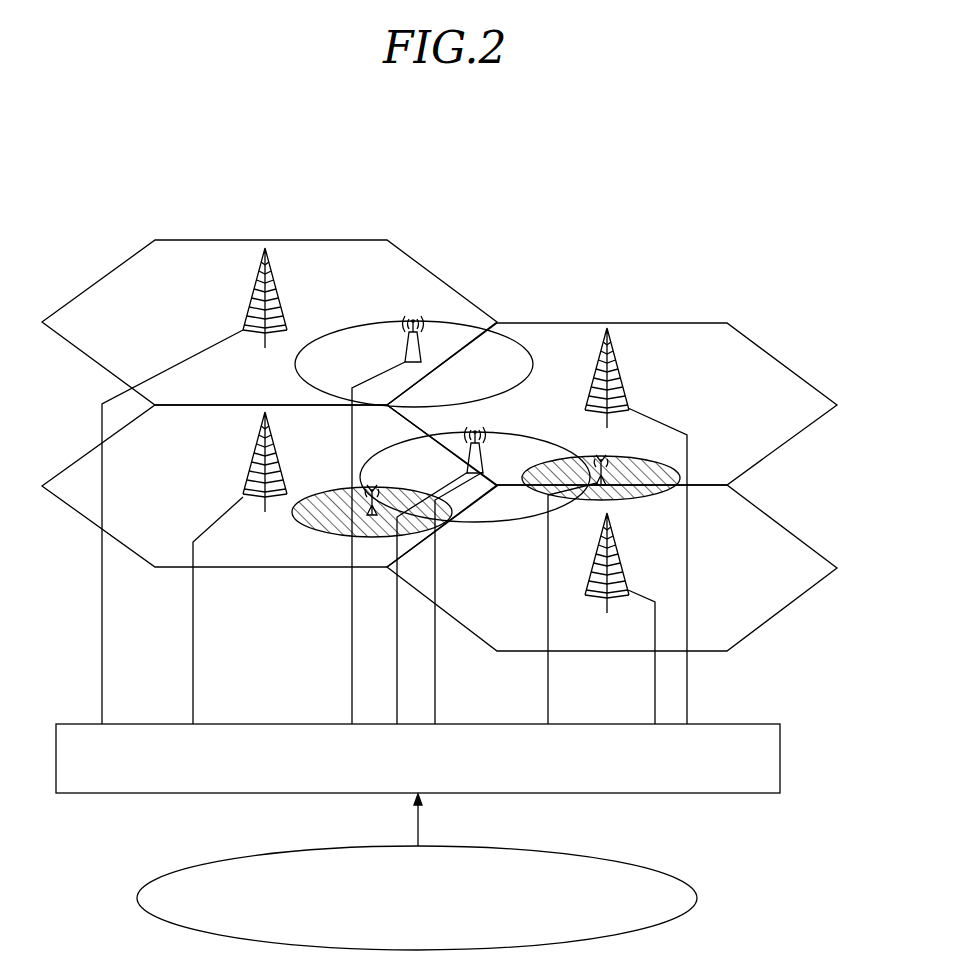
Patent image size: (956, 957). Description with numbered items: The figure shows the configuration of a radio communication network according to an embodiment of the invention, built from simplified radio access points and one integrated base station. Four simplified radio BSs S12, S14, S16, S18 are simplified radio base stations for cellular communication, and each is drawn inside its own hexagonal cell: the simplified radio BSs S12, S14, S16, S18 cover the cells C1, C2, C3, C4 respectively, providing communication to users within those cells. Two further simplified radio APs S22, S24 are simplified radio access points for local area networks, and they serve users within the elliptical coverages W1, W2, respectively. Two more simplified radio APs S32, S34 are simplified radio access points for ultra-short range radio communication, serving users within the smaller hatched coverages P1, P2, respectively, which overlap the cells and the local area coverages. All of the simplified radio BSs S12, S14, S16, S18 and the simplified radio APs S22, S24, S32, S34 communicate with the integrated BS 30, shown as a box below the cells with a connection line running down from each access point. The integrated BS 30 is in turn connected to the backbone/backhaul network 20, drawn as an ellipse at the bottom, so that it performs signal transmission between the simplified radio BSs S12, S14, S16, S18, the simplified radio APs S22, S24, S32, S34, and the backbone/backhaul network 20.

The cell C1 is at (472, 633).
The cell C2 is at (780, 446).
The cell C3 is at (80, 458).
The cell C4 is at (112, 270).
The simplified radio BS S12 is at (618, 542).
The simplified radio BS S14 is at (618, 358).
The simplified radio BS S16 is at (252, 466).
The simplified radio BS S18 is at (252, 303).
The simplified radio AP S22 is at (482, 462).
The simplified radio AP S24 is at (404, 346).
The simplified radio AP S32 is at (365, 490).
The simplified radio AP S34 is at (606, 470).
The coverage W1 is at (494, 522).
The coverage W2 is at (384, 322).
The coverage P1 is at (330, 534).
The coverage P2 is at (680, 466).
The integrated base station 30 is at (742, 724).
The backbone/backhaul network 20 is at (582, 850).